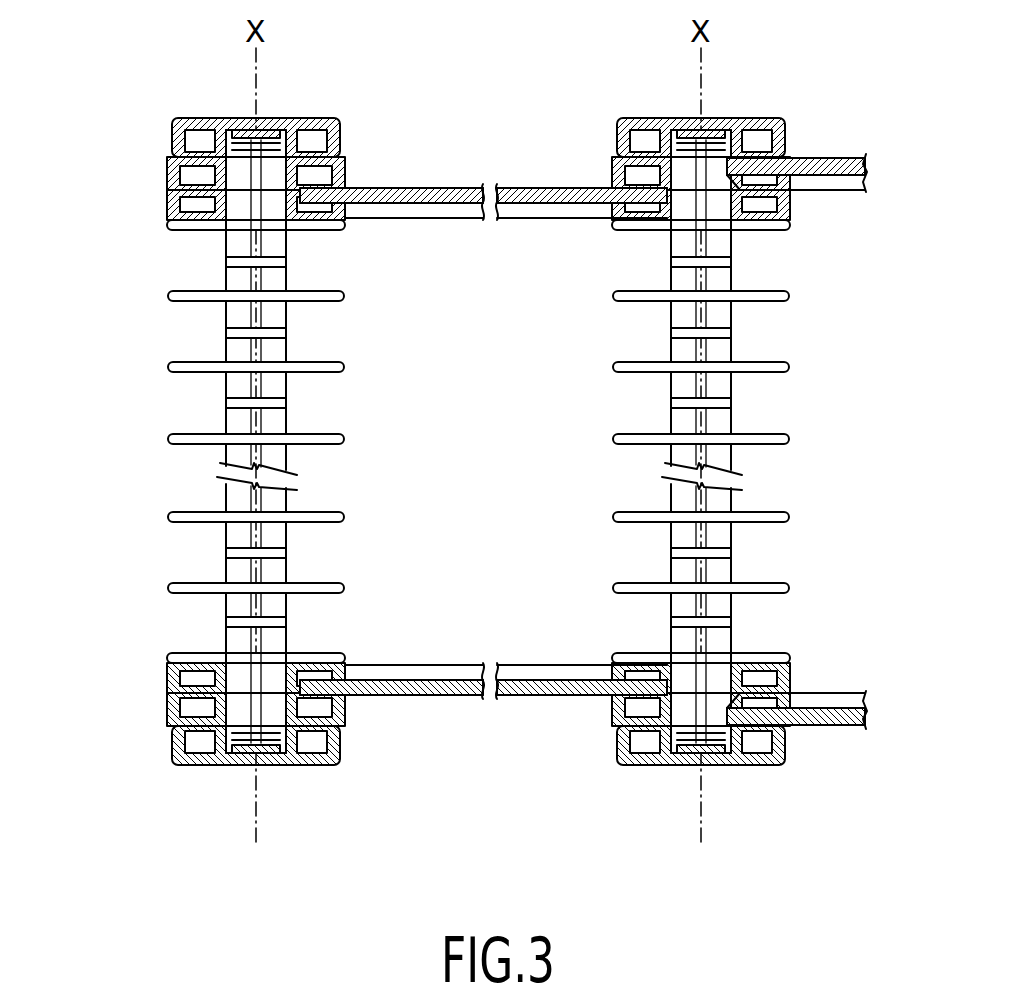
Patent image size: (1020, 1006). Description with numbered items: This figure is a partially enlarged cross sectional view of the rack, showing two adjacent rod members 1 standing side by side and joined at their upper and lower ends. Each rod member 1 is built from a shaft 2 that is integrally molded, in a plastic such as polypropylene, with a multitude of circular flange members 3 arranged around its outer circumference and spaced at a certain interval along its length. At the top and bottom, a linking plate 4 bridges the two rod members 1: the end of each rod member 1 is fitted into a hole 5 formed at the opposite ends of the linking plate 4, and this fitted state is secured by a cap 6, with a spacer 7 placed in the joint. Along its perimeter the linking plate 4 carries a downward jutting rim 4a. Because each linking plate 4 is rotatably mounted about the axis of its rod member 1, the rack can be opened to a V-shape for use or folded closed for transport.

The rod member 1 is at (158, 451).
The shaft 2 is at (288, 345).
The flange member 3 is at (170, 296).
The linking plate 4 is at (410, 187).
The rim 4a is at (170, 211).
The hole 5 is at (277, 228).
The cap 6 is at (292, 120).
The spacer 7 is at (167, 176).